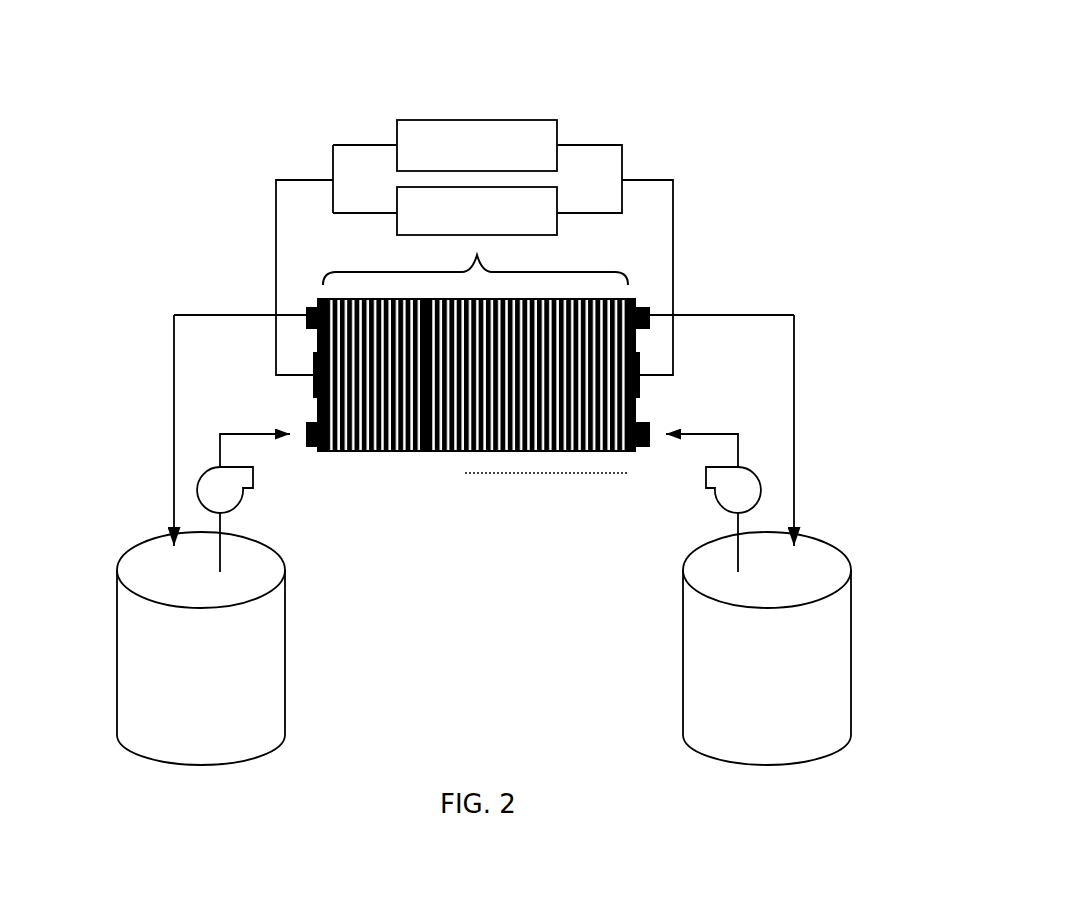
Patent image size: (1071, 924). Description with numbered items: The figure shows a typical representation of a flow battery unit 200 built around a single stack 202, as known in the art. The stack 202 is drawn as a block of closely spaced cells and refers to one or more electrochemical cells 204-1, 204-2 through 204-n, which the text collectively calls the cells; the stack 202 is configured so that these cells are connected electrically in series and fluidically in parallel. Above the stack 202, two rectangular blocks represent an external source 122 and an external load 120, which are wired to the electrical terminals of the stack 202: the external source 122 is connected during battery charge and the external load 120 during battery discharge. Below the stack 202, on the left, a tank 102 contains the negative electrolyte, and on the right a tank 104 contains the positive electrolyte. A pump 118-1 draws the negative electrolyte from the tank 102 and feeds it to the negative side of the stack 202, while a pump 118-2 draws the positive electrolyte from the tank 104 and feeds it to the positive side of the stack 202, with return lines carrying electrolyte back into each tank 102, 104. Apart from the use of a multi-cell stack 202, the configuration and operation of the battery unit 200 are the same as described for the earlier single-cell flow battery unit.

The flow battery unit 200 is at (136, 58).
The external source 122 is at (560, 122).
The external load 120 is at (560, 188).
The stack 202 is at (617, 272).
The electrochemical cell 204-1 is at (381, 451).
The electrochemical cell 204-2 is at (482, 451).
The electrochemical cell 204-n is at (633, 452).
The pump 118-1 is at (197, 488).
The pump 118-2 is at (765, 488).
The tank 102 is at (150, 675).
The tank 104 is at (830, 645).